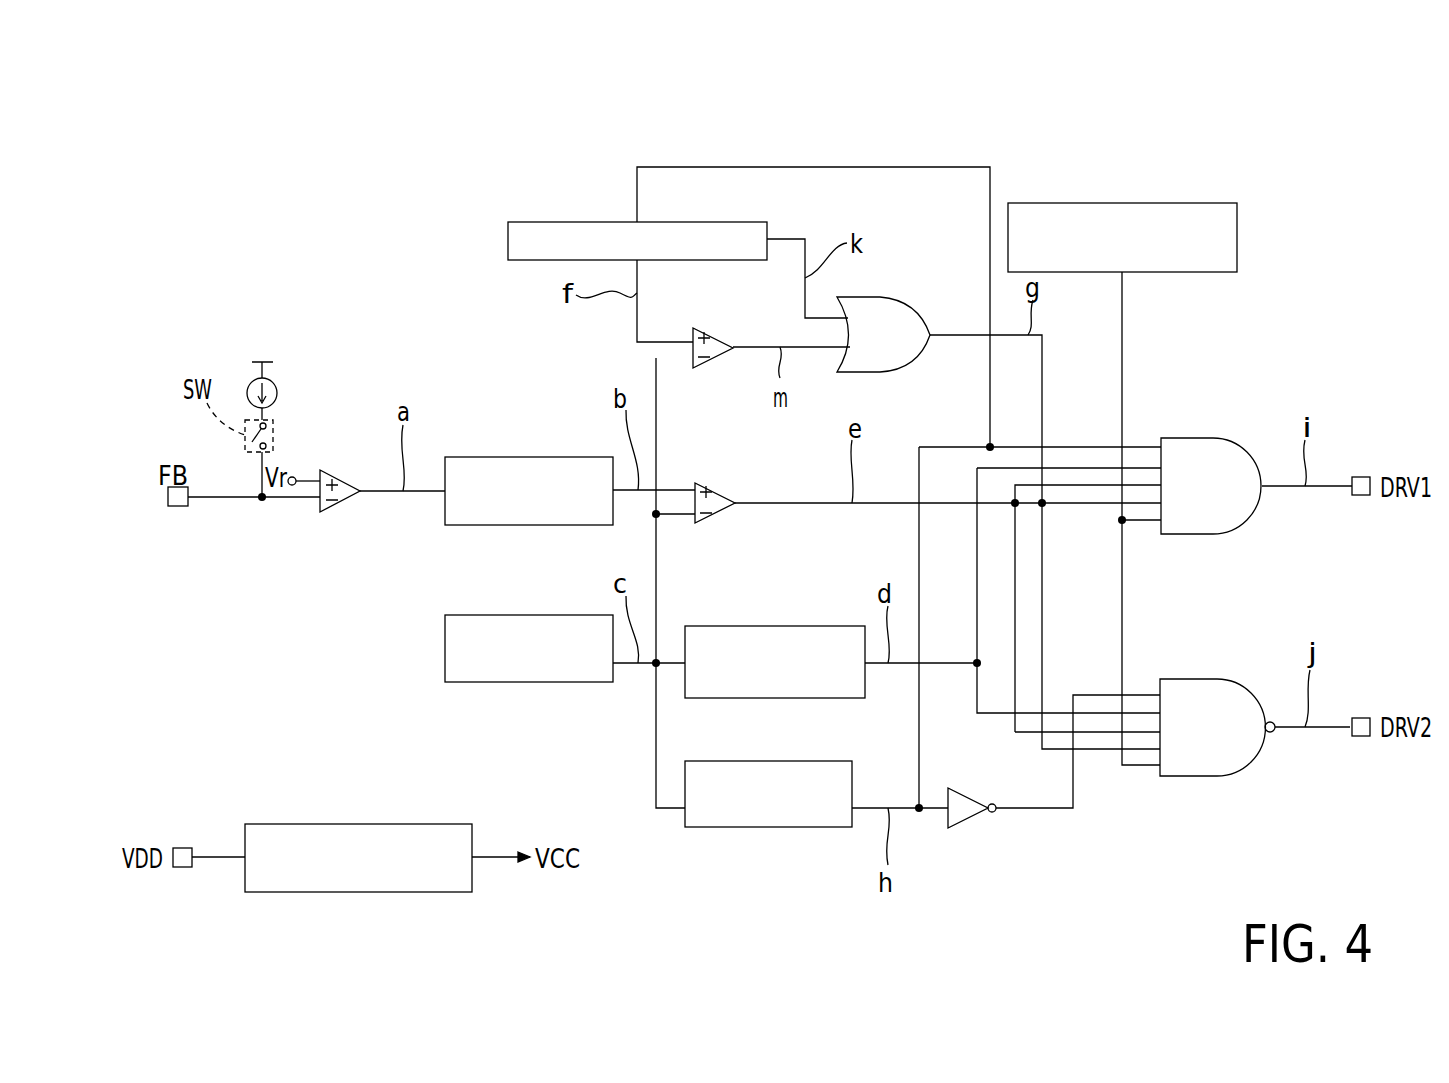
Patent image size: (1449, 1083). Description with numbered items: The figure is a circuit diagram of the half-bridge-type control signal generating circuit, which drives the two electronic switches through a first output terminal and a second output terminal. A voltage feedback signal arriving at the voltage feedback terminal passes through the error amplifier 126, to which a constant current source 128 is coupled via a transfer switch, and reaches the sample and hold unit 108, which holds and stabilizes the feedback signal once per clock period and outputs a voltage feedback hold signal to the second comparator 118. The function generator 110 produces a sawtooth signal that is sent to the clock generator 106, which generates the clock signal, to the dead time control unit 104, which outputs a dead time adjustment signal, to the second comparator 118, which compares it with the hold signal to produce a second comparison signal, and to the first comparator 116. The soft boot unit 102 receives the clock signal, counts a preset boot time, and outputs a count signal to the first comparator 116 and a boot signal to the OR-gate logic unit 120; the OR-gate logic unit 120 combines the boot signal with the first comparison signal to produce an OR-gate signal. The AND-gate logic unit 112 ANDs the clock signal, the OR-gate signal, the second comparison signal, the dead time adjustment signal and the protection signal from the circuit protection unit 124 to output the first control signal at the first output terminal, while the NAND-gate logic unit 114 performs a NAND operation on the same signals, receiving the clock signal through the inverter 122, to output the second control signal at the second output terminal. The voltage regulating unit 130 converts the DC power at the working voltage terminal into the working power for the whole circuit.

The soft boot unit 102 is at (520, 222).
The dead time control unit 104 is at (770, 626).
The clock generator 106 is at (766, 827).
The sample and hold unit 108 is at (530, 457).
The function generator 110 is at (530, 682).
The AND-gate logic unit 112 is at (1213, 438).
The NAND-gate logic unit 114 is at (1210, 679).
The first comparator 116 is at (712, 330).
The second comparator 118 is at (712, 483).
The OR-gate logic unit 120 is at (908, 300).
The inverter 122 is at (968, 818).
The circuit protection unit 124 is at (1133, 203).
The error amplifier 126 is at (332, 470).
The constant current source 128 is at (278, 392).
The voltage regulating unit 130 is at (355, 824).